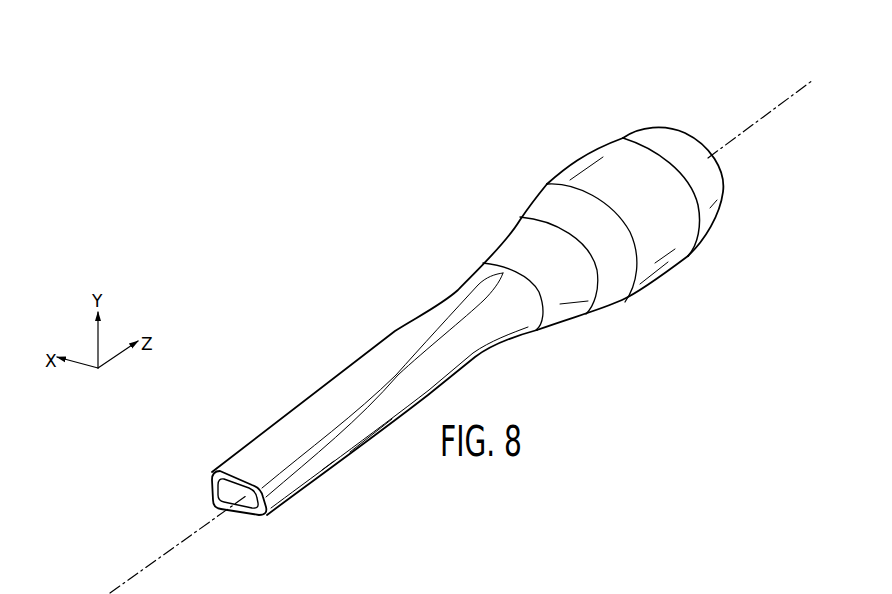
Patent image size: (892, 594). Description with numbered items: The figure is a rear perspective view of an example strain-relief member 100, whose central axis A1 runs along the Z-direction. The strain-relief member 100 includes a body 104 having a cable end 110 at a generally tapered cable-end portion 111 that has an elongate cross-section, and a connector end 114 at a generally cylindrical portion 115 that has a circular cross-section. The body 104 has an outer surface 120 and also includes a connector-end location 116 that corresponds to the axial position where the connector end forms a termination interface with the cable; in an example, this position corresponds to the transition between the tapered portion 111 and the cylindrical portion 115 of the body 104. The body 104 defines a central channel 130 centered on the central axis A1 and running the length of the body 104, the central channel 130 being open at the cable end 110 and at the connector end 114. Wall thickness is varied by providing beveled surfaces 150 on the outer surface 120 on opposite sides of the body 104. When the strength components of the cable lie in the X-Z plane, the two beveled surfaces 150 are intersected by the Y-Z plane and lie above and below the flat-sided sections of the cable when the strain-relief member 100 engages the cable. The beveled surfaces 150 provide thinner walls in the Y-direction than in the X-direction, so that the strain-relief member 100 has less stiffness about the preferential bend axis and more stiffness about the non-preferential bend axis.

The strain-relief member 100 is at (453, 190).
The body 104 is at (485, 257).
The cable end 110 is at (210, 501).
The tapered cable-end portion 111 is at (243, 443).
The connector end 114 is at (681, 133).
The cylindrical portion 115 is at (608, 125).
The connector-end location 116 is at (538, 183).
The outer surface 120 is at (487, 343).
The central channel 130 is at (250, 500).
The beveled surfaces 150 is at (297, 417).
The central axis A1 is at (777, 105).